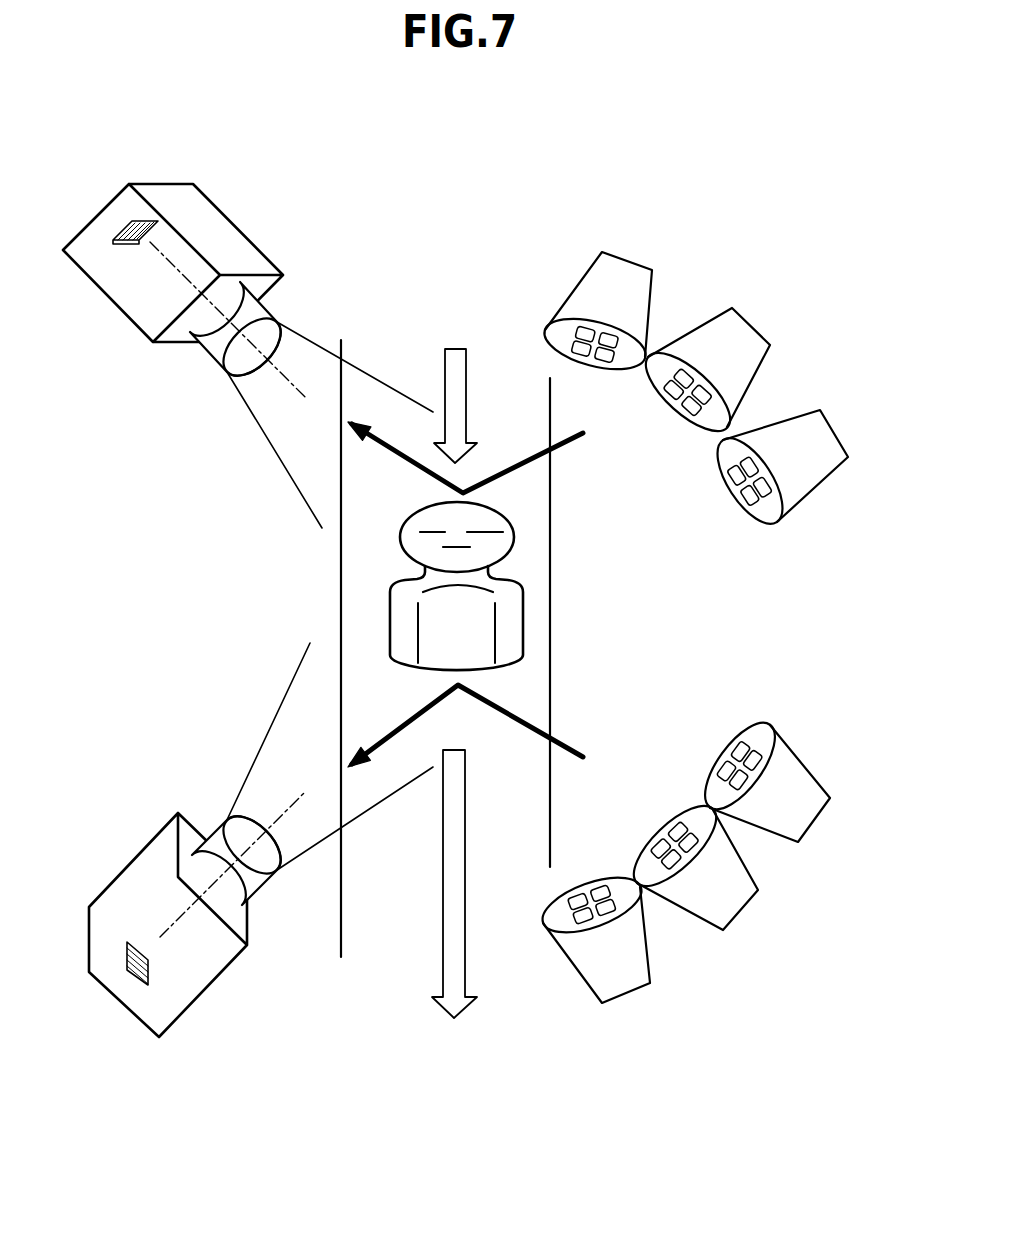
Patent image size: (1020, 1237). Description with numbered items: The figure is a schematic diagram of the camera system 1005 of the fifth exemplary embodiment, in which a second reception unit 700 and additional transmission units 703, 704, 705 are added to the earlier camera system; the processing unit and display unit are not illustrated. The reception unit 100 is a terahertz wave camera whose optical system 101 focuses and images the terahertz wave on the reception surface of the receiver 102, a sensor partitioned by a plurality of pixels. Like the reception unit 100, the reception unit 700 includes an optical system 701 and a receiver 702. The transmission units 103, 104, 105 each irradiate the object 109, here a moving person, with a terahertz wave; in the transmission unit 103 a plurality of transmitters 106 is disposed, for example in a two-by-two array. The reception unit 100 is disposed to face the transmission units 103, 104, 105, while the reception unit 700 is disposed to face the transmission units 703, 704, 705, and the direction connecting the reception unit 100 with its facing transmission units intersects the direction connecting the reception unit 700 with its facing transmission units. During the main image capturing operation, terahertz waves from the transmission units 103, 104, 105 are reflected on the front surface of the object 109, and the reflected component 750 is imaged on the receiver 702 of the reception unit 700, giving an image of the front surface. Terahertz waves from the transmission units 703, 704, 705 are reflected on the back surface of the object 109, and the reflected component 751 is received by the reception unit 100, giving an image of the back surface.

The camera system 1005 is at (577, 119).
The reception unit 100 is at (226, 212).
The optical system 101 is at (254, 314).
The receiver 102 is at (123, 230).
The reception unit 700 is at (127, 868).
The optical system 701 is at (250, 877).
The receiver 702 is at (135, 977).
The transmission unit 703 is at (618, 280).
The transmission unit 704 is at (745, 340).
The transmission unit 705 is at (827, 443).
The transmission unit 103 is at (770, 757).
The transmission unit 104 is at (737, 905).
The transmission unit 105 is at (617, 980).
The transmitters 106 is at (742, 748).
The object 109 is at (523, 598).
The reflected component 750 is at (390, 732).
The reflected component 751 is at (400, 458).